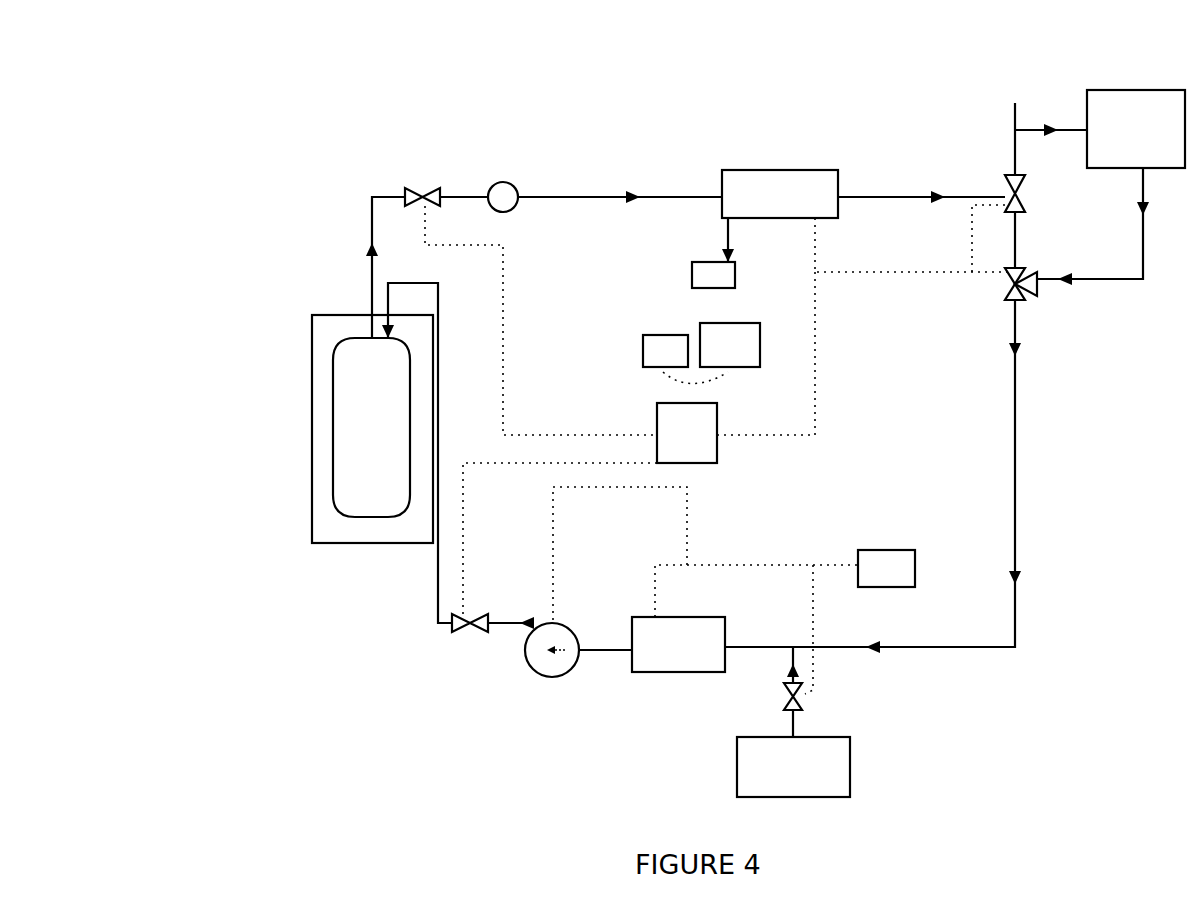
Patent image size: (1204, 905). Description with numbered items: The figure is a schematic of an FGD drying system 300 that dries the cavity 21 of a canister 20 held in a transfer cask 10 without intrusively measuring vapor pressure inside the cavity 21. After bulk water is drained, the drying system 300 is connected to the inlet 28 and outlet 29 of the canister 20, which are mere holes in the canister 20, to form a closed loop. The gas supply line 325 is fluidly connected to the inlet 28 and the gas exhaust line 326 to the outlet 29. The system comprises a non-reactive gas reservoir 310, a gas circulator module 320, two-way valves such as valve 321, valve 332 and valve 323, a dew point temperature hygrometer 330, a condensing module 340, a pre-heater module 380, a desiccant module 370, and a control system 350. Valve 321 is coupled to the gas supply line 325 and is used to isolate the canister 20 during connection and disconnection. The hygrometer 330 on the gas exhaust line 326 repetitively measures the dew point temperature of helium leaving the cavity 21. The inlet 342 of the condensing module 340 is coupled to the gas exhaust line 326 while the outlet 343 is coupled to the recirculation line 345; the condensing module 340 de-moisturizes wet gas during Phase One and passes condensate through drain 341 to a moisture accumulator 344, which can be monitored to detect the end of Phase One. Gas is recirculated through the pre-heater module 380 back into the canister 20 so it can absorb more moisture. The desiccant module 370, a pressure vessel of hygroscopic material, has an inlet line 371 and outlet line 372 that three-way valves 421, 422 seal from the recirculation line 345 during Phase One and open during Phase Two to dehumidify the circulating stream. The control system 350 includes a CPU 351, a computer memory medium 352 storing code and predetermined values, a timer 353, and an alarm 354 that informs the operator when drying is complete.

The drying system 300 is at (252, 103).
The transfer cask 10 is at (312, 430).
The canister 20 is at (333, 360).
The cavity 21 is at (345, 452).
The inlet 28 is at (388, 338).
The outlet 29 is at (360, 337).
The gas supply line 325 is at (440, 360).
The gas exhaust line 326 is at (372, 232).
The two-way valve 332 is at (435, 188).
The dew point temperature hygrometer 330 is at (505, 182).
The condensing module 340 is at (782, 171).
The drain 341 is at (728, 235).
The inlet of the condenser module 342 is at (722, 197).
The outlet of the condenser module 343 is at (838, 197).
The moisture accumulator 344 is at (692, 283).
The control system 350 is at (795, 378).
The CPU 351 is at (715, 463).
The computer memory medium 352 is at (663, 335).
The timer 353 is at (740, 323).
The alarm 354 is at (890, 550).
The desiccant module 370 is at (1120, 90).
The inlet line 371 is at (1048, 128).
The outlet line 372 is at (1130, 279).
The three-way valve 421 is at (1003, 192).
The three-way valve 422 is at (1022, 282).
The recirculation line 345 is at (1018, 398).
The two-way valve 321 is at (457, 632).
The gas circulator module 320 is at (571, 669).
The pre-heater module 380 is at (682, 628).
The two-way valve 323 is at (785, 694).
The non-reactive gas reservoir 310 is at (850, 765).